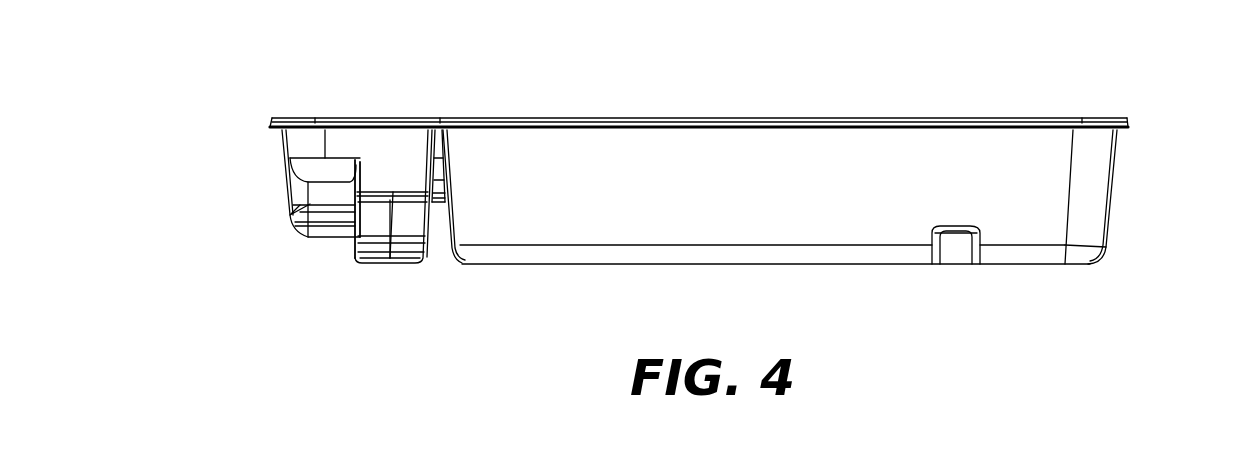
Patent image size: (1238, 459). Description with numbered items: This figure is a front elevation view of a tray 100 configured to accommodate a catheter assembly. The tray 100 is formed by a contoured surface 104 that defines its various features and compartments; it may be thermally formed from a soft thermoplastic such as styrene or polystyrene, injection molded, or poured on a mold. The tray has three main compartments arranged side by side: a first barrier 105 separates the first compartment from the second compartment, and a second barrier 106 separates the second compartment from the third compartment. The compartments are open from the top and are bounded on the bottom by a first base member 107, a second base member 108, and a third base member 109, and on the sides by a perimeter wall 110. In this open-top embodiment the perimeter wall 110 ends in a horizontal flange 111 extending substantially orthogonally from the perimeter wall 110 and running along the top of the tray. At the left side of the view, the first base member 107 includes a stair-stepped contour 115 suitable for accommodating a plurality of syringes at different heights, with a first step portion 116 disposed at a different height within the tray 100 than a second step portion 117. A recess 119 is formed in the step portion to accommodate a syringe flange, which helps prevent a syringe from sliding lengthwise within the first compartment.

The tray 100 is at (650, 184).
The contoured surface 104 is at (1090, 260).
The first barrier 105 is at (433, 202).
The second barrier 106 is at (953, 252).
The first base member 107 is at (388, 237).
The second base member 108 is at (680, 265).
The third base member 109 is at (1045, 263).
The perimeter wall 110 is at (1087, 193).
The horizontal flange 111 is at (1040, 118).
The stair-stepped contour 115 is at (325, 251).
The first step portion 116 is at (290, 235).
The second step portion 117 is at (368, 265).
The recess 119 is at (417, 267).